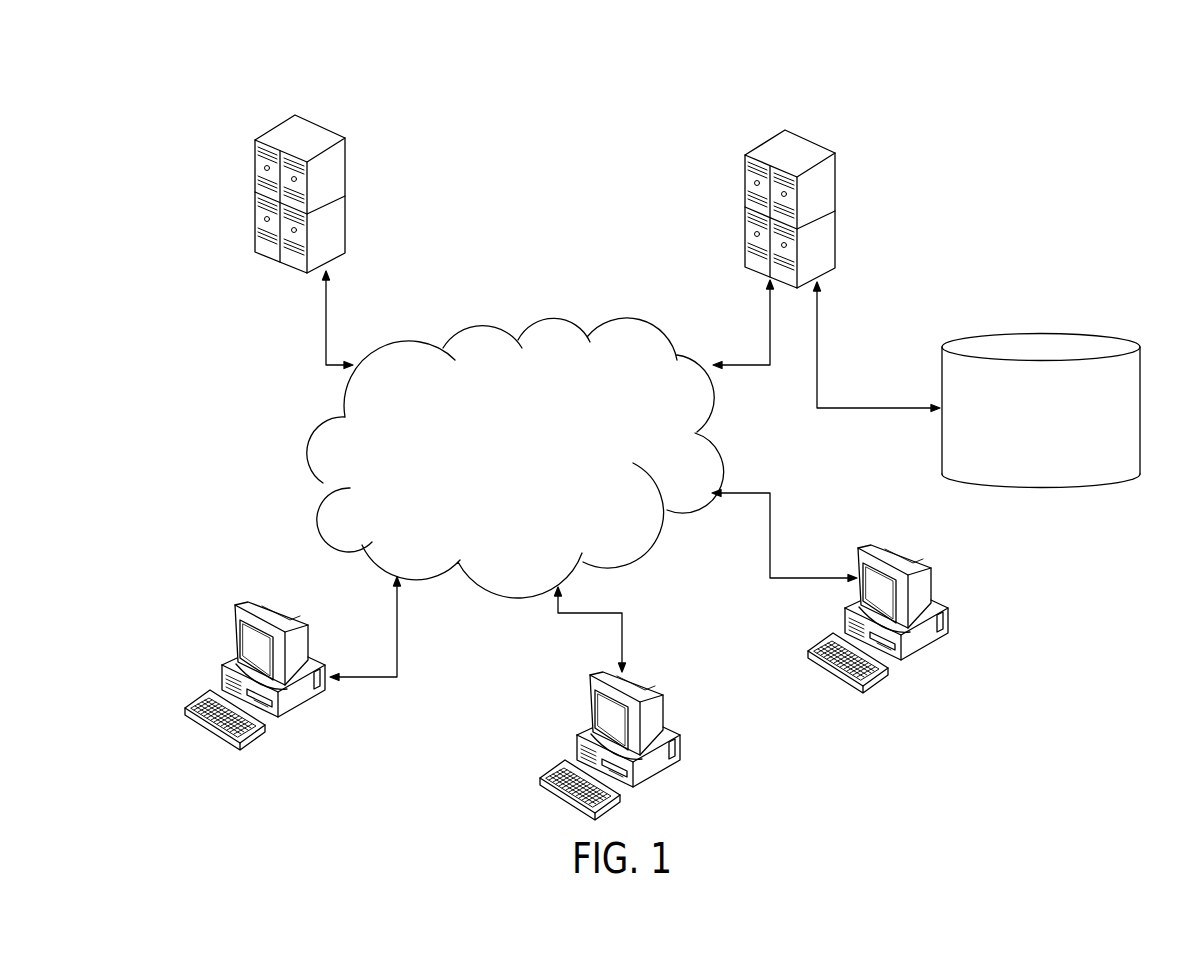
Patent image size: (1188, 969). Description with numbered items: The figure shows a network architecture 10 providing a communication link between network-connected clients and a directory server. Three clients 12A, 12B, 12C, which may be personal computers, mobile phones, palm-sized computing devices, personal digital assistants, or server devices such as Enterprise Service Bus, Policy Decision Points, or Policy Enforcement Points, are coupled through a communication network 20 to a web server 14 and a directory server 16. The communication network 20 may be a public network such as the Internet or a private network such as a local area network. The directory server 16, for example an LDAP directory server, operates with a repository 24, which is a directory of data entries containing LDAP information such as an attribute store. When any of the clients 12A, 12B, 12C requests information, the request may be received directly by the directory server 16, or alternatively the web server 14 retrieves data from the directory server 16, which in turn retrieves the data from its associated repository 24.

The network architecture 10 is at (1113, 130).
The client 12A is at (320, 658).
The client 12B is at (682, 747).
The client 12C is at (948, 618).
The web server 14 is at (320, 142).
The directory server 16 is at (810, 158).
The communication network 20 is at (563, 318).
The repository 24 is at (1090, 342).